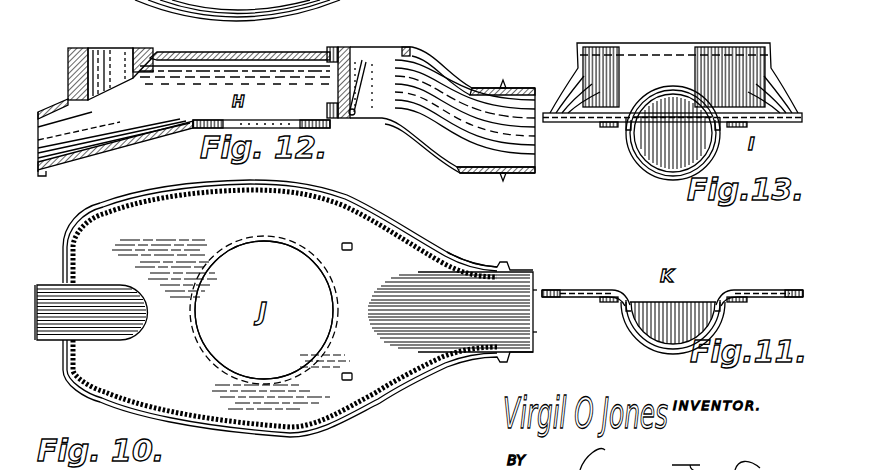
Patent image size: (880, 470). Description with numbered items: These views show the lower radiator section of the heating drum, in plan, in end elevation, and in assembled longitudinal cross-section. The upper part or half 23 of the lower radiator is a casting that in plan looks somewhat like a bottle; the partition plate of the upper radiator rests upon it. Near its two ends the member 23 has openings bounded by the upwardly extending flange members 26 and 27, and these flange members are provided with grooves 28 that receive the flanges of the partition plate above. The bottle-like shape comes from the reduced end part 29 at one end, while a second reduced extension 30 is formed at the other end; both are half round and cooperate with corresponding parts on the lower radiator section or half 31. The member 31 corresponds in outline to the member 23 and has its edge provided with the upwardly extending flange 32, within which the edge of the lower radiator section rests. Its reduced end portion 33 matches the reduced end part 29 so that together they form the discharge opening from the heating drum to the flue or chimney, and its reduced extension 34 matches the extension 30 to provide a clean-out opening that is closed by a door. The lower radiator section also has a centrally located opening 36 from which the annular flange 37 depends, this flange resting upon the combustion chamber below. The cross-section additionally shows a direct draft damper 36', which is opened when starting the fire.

In FIG. 12, the upper part or half of the lower radiator 23 is at (247, 58).
In FIG. 12, the upwardly extending flange member 26 is at (68, 72).
In FIG. 12, the upwardly extending flange member 27 is at (420, 53).
In FIG. 12, the grooves 28 is at (76, 50).
In FIG. 12, the reduced end part 29 is at (481, 88).
In FIG. 12, the reduced extension 30 is at (50, 108).
In FIG. 10, the lower radiator section or half 31 is at (332, 218).
In FIG. 10, the upwardly extending flange 32 is at (447, 257).
In FIG. 10, the reduced end portion 33 is at (510, 287).
In FIG. 10, the reduced extension 34 is at (52, 283).
In FIG. 12, the centrally located opening 36 is at (335, 109).
In FIG. 10, the centrally located opening 36 is at (279, 310).
In FIG. 12, the diagonal brace 36' is at (359, 63).
In FIG. 12, the annular flange 37 is at (195, 130).